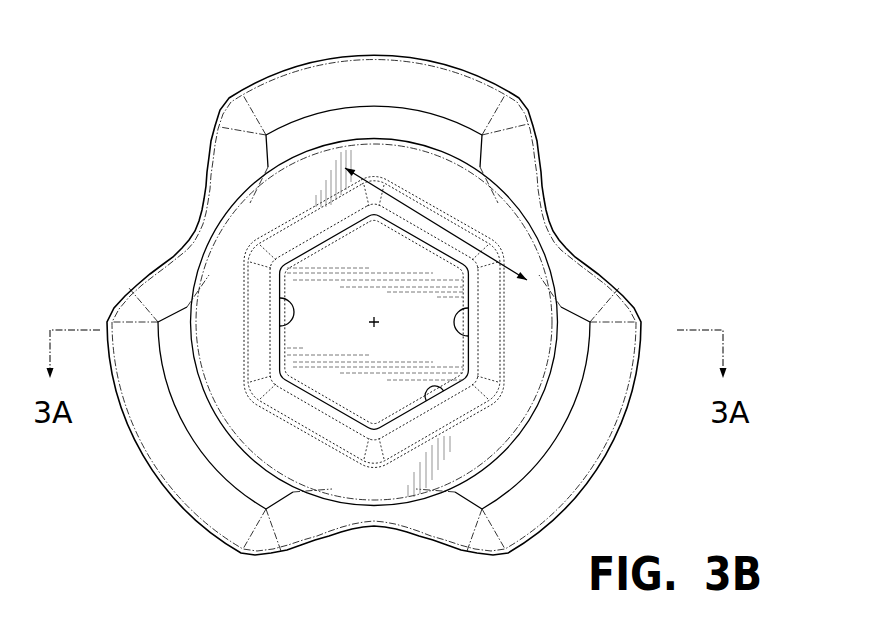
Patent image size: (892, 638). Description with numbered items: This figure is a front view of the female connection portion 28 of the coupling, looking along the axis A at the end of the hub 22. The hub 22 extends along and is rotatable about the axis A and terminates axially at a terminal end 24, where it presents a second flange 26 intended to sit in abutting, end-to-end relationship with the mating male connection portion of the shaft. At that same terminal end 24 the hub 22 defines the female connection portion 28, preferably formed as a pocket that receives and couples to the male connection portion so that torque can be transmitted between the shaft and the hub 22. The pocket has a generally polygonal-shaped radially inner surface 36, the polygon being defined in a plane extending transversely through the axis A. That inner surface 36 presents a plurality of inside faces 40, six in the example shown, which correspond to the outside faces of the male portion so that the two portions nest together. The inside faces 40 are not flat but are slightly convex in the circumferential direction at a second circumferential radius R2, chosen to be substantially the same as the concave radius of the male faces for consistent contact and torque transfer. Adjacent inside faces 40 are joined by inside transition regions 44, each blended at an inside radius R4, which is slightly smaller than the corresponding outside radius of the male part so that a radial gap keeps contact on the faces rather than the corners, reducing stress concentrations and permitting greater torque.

The hub 22 is at (606, 146).
The terminal end 24 is at (523, 257).
The second flange 26 is at (488, 214).
The female connection portion 28 is at (328, 397).
The radially inner surface 36 is at (281, 298).
The inside faces 40 is at (460, 308).
The inside transition regions 44 is at (292, 380).
The inside radius R4 is at (374, 401).
The second circumferential radius R2 is at (350, 172).
The axis A is at (377, 325).